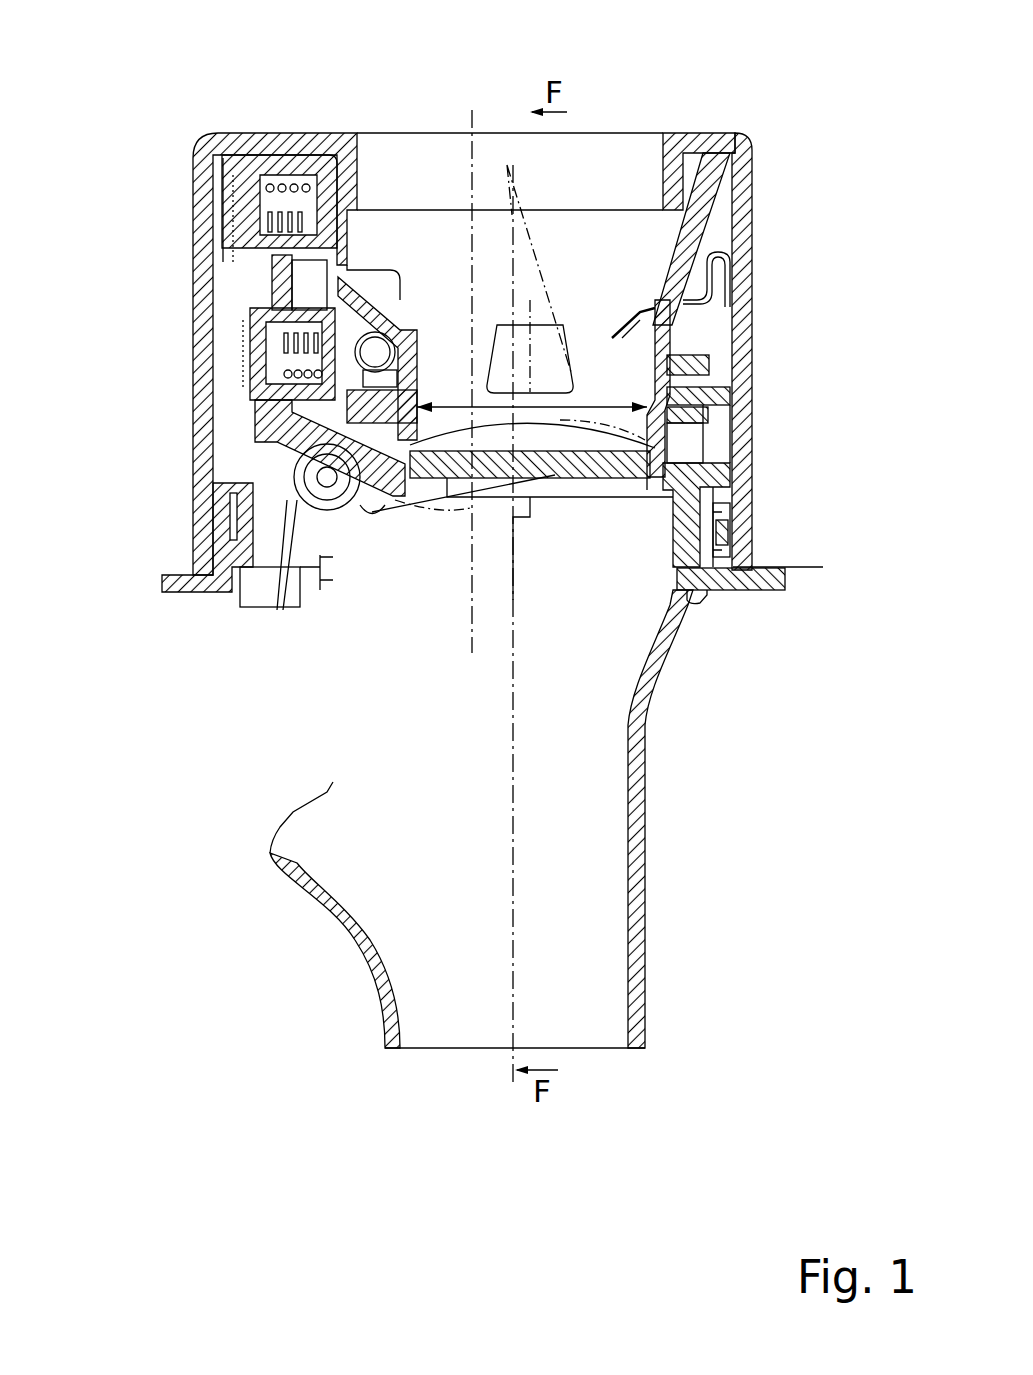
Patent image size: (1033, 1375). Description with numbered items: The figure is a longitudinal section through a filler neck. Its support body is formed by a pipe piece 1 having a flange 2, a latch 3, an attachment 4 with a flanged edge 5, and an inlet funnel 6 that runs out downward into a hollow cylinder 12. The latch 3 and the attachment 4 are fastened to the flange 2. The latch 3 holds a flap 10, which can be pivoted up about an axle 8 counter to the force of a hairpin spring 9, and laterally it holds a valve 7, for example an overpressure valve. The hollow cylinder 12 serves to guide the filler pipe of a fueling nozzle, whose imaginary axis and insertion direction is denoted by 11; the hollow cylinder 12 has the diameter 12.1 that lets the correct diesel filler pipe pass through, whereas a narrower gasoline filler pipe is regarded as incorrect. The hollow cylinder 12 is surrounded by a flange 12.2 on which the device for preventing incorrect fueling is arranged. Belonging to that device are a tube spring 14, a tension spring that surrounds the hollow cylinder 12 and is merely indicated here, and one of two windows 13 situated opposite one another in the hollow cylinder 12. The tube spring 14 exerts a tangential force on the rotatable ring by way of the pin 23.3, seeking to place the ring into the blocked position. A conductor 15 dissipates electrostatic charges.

The pipe piece 1 is at (638, 878).
The flange 2 is at (723, 537).
The latch 3 is at (712, 483).
The attachment 4 is at (742, 248).
The flanged edge 5 is at (670, 175).
The inlet funnel 6 is at (698, 225).
The valve 7 is at (283, 285).
The axle 8 is at (327, 477).
The hairpin spring 9 is at (372, 512).
The flap 10 is at (562, 467).
The axis and insertion direction of a filler pipe 11 is at (513, 820).
The hollow cylinder 12 is at (655, 395).
The diameter 12.1 is at (468, 410).
The flange 12.2 is at (722, 396).
The window 13 is at (516, 366).
The tube spring 14 is at (357, 350).
The conductor 15 is at (730, 432).
The pin 23.3 is at (376, 382).